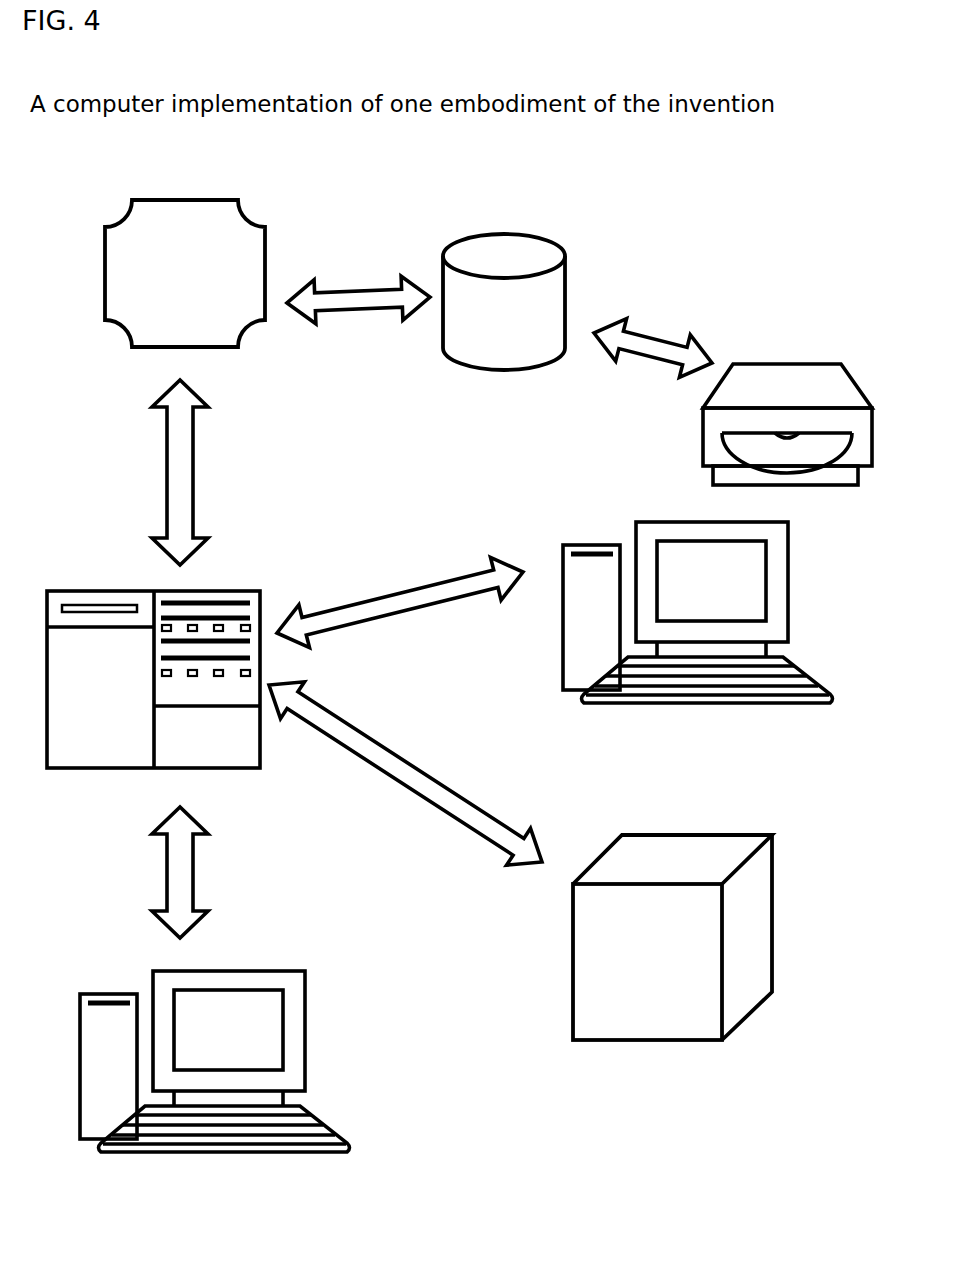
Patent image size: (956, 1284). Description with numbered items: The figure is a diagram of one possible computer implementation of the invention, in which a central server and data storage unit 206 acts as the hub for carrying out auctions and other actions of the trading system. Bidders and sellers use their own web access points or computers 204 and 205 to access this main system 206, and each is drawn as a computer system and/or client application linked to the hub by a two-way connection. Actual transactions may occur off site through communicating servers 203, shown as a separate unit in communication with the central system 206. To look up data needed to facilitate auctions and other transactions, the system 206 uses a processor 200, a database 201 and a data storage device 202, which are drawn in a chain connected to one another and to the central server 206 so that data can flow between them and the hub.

The processor 200 is at (149, 286).
The database 201 is at (474, 344).
The data storage device 202 is at (759, 397).
The servers in communication 203 is at (619, 967).
The computer system and/or client application 204 is at (690, 580).
The computer system and/or client application 205 is at (203, 1027).
The central processing and storage for trading system 206 is at (61, 743).